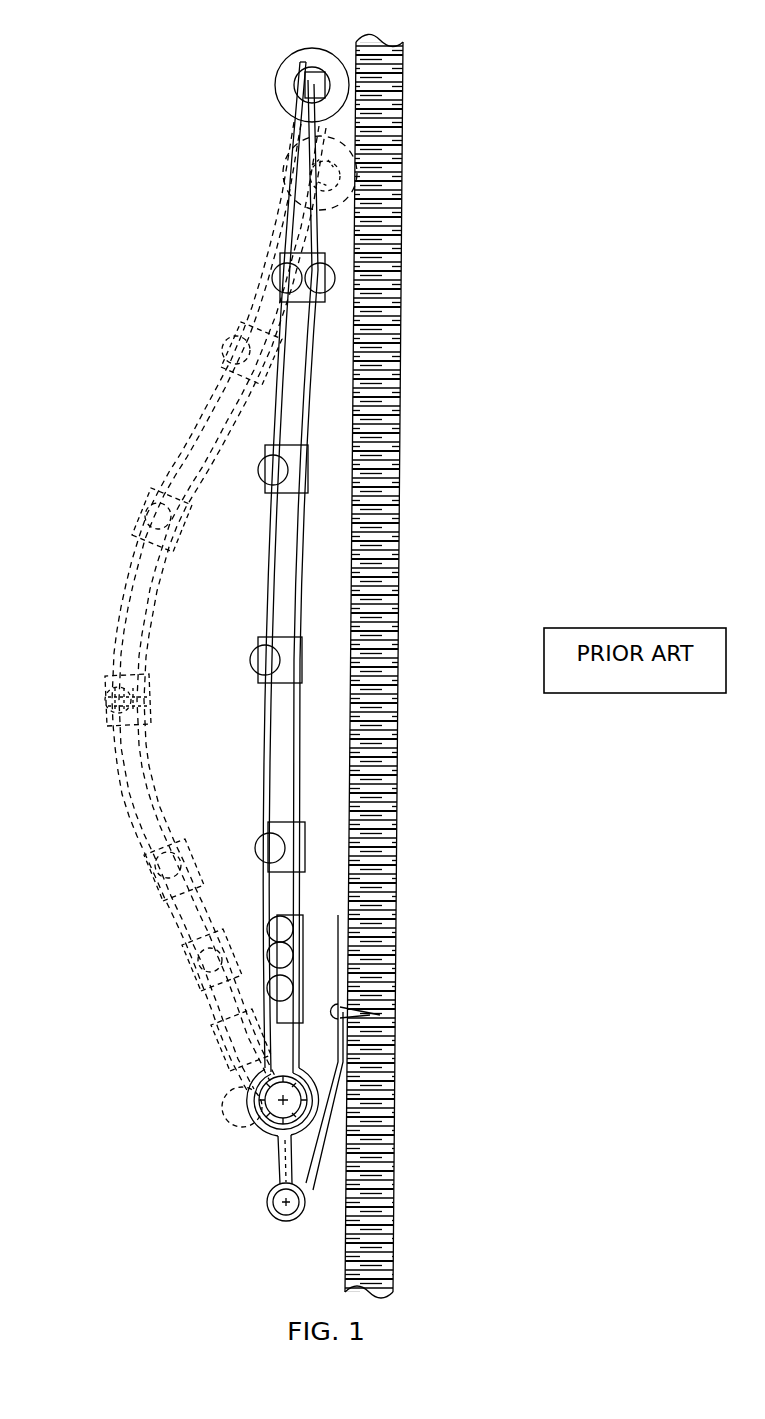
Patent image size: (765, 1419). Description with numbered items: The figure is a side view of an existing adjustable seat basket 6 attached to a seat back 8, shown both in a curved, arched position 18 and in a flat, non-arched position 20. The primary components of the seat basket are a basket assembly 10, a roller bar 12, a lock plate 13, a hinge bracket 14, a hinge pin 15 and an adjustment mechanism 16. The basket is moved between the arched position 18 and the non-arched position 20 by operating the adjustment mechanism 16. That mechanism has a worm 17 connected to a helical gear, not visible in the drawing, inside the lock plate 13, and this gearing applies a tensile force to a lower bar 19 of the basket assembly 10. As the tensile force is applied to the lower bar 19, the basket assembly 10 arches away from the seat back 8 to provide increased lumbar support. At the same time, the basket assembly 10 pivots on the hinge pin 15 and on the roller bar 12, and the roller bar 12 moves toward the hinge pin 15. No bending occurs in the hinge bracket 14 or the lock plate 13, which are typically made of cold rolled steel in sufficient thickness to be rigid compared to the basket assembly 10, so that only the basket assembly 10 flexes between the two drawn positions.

The adjustable seat basket 6 is at (118, 640).
The seat back 8 is at (398, 598).
The basket assembly 10 is at (128, 595).
The roller bar 12 is at (305, 48).
The lock plate 13 is at (273, 1030).
The hinge bracket 14 is at (316, 1185).
The hinge pin 15 is at (270, 1215).
The adjustment mechanism 16 is at (260, 1143).
The worm 17 is at (240, 1100).
The arched position 18 is at (120, 738).
The lower bar 19 is at (148, 753).
The non-arched position 20 is at (263, 712).